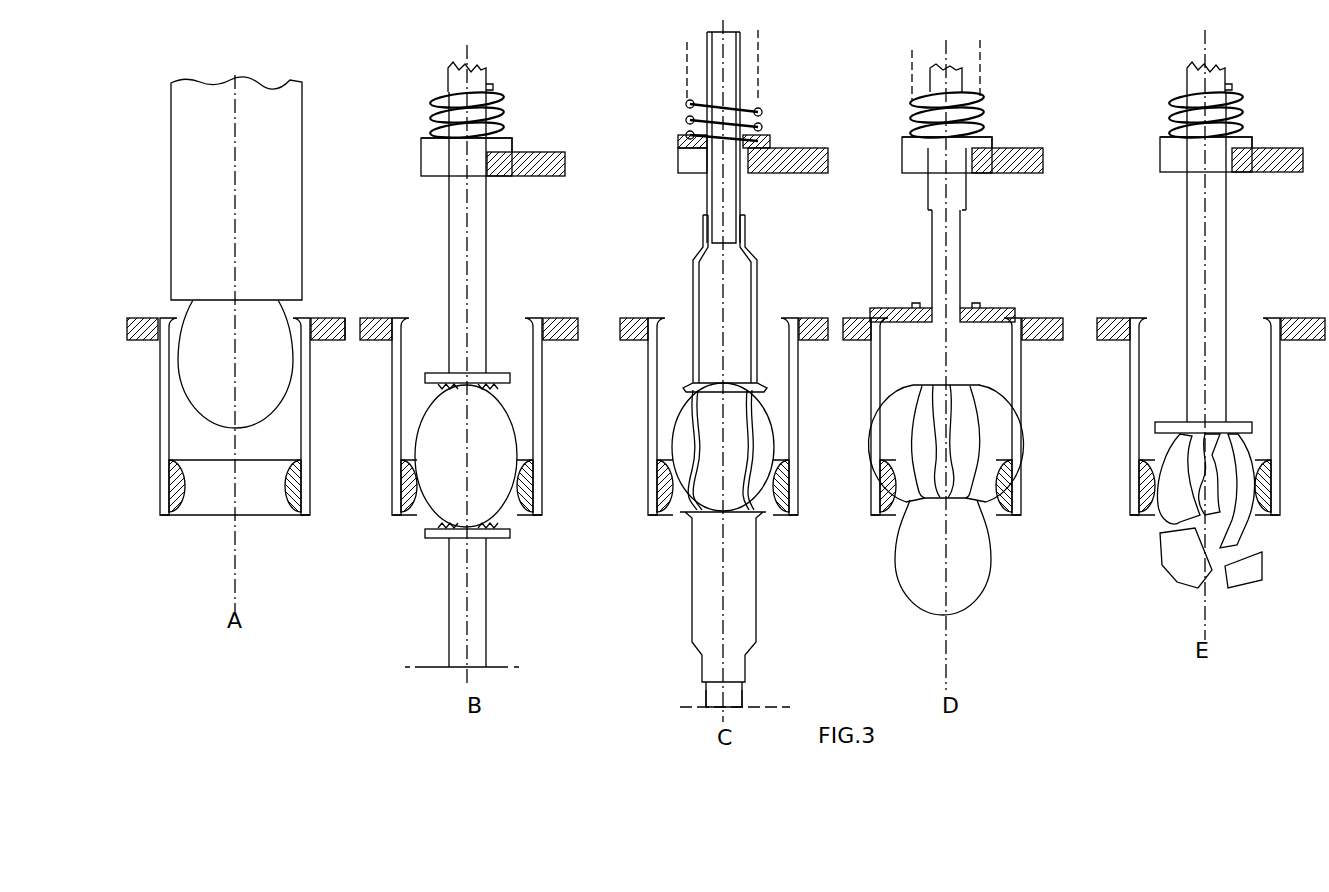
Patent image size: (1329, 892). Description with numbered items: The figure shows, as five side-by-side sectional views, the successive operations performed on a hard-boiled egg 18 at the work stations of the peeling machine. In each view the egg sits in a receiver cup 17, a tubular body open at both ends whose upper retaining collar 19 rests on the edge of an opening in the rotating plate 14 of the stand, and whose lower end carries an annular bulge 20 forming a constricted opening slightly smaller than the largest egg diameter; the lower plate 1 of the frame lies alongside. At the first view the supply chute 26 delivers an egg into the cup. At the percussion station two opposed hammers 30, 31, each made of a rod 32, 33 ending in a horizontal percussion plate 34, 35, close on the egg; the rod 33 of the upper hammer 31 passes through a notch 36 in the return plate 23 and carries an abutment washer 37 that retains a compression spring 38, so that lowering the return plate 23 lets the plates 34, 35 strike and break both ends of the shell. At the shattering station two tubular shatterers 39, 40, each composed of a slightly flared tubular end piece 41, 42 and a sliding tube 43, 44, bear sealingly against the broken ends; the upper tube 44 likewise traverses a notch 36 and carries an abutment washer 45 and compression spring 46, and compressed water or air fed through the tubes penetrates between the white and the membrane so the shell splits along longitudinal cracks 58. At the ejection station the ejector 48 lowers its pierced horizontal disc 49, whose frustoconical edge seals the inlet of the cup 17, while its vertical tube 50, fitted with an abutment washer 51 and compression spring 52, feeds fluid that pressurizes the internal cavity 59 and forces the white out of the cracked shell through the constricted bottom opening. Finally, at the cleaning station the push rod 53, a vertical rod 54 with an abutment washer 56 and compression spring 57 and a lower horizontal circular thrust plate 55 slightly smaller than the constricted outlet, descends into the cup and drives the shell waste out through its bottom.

The horizontal lower plate 1 is at (339, 346).
The horizontal circular plate 14 is at (624, 316).
The receiver cup 17 is at (305, 445).
The hard-boiled egg 18 is at (226, 379).
The retaining collar 19 is at (318, 322).
The annular bulge 20 is at (283, 490).
The return plate 23 is at (560, 158).
The supply chute 26 is at (223, 227).
The lower hammer 30 is at (448, 602).
The upper hammer 31 is at (488, 305).
The rod of lower hammer 32 is at (478, 630).
The rod of upper hammer 33 is at (460, 233).
The lower percussion plate 34 is at (500, 540).
The upper percussion plate 35 is at (505, 378).
The notch 36 is at (437, 164).
The abutment washer 37 is at (506, 144).
The compression spring 38 is at (438, 94).
The lower tubular shatterer 39 is at (745, 609).
The upper tubular shatterer 40 is at (730, 211).
The lower tubular end piece 41 is at (710, 578).
The upper tubular end piece 42 is at (707, 282).
The lower sliding tube 43 is at (735, 697).
The upper sliding tube 44 is at (710, 198).
The abutment washer 45 is at (773, 138).
The compression spring 46 is at (688, 104).
The ejector 48 is at (956, 327).
The horizontal disc 49 is at (993, 310).
The vertical tube 50 is at (930, 255).
The abutment washer 51 is at (908, 140).
The compression spring 52 is at (967, 98).
The push rod 53 is at (1217, 325).
The vertical rod 54 is at (1193, 228).
The horizontal circular thrust plate 55 is at (1240, 425).
The abutment washer 56 is at (1160, 138).
The compression spring 57 is at (1238, 100).
The longitudinal cracks 58 is at (690, 492).
The internal cavity 59 is at (985, 372).